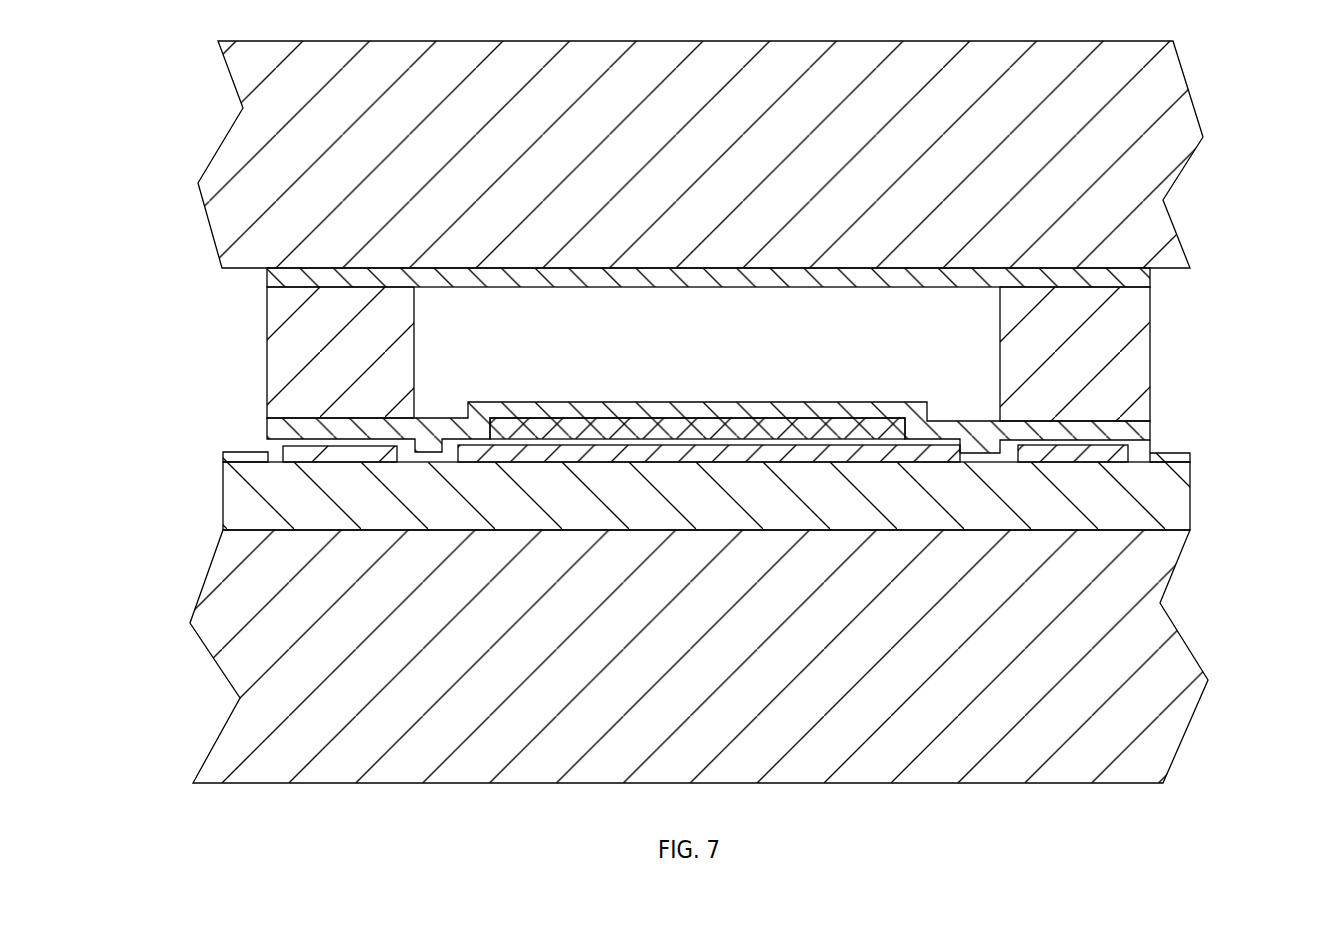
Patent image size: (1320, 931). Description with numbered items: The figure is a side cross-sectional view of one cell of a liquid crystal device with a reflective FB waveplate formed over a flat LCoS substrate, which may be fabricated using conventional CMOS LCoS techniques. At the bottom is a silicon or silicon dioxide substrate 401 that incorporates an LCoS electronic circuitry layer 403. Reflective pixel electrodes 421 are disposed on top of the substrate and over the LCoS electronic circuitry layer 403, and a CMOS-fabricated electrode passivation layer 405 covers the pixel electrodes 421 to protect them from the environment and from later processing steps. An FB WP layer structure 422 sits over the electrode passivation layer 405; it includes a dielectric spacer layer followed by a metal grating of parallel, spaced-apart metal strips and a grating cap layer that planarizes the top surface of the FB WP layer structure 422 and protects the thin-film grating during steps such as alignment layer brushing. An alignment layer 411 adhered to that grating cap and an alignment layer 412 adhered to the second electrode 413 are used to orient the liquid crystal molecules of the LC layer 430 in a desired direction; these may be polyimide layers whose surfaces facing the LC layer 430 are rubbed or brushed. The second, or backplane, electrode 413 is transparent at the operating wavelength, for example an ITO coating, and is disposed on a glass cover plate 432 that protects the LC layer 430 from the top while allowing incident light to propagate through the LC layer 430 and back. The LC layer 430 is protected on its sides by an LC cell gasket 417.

The substrate 401 is at (190, 623).
The LCoS electronic circuitry layer 403 is at (232, 508).
The electrode passivation layer 405 is at (225, 452).
The alignment layer 411 is at (1150, 424).
The alignment layer 412 is at (1130, 283).
The second electrode 413 is at (1136, 258).
The LC cell gasket 417 is at (267, 372).
The reflective pixel electrodes 421 is at (527, 455).
The FB WP layer structure 422 is at (582, 425).
The LC layer 430 is at (932, 345).
The glass cover plate 432 is at (207, 172).